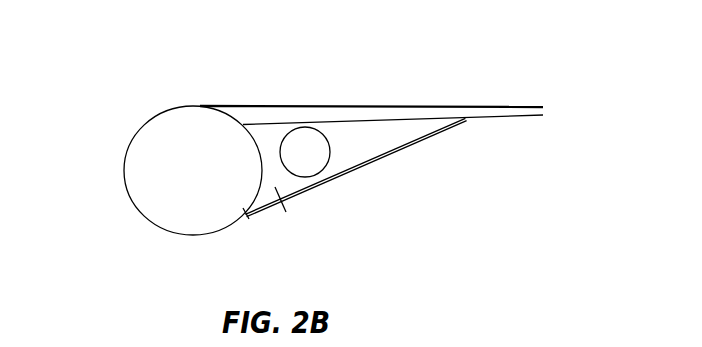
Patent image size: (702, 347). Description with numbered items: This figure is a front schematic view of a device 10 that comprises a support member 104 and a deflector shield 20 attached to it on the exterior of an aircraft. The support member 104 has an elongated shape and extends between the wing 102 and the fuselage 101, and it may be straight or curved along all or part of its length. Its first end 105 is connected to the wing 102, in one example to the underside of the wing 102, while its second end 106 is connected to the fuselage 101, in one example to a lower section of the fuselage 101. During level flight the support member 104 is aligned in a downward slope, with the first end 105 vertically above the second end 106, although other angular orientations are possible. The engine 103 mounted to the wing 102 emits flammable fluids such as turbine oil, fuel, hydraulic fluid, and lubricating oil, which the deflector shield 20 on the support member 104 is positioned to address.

The device 10 is at (319, 160).
The deflector shield 20 is at (284, 207).
The fuselage 101 is at (152, 142).
The wing 102 is at (485, 108).
The engine 103 is at (313, 143).
The support member 104 is at (410, 142).
The first end 105 is at (462, 120).
The second end 106 is at (248, 215).